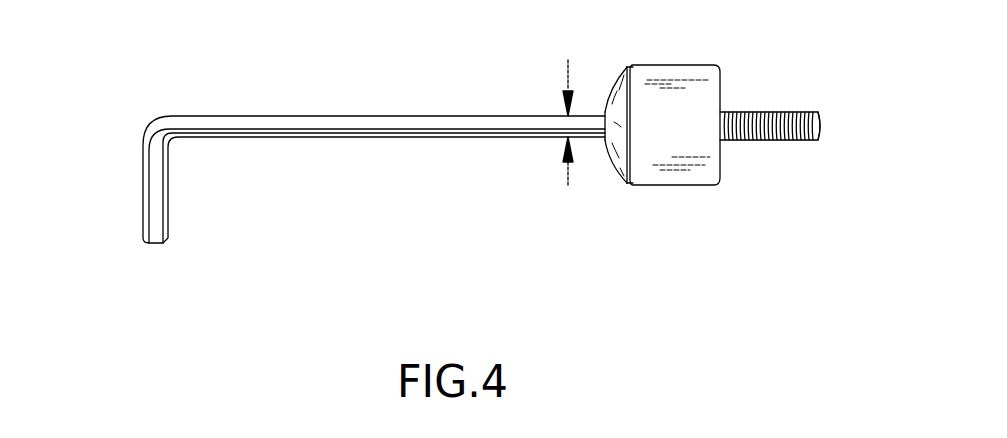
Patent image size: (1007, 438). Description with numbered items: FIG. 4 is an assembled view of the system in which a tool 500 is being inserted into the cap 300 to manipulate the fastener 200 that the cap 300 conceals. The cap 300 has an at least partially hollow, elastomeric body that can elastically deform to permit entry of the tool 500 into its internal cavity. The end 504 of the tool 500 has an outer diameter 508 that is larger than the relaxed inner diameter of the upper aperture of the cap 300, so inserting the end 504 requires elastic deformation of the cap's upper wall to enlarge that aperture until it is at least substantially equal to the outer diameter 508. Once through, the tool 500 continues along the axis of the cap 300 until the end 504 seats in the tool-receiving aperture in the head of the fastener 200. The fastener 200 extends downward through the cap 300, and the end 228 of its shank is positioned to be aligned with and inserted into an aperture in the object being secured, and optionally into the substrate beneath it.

The tool 500 is at (140, 192).
The end 504 is at (538, 115).
The outer diameter 508 is at (568, 141).
The cap 300 is at (673, 188).
The fastener 200 is at (769, 141).
The end 228 is at (818, 112).